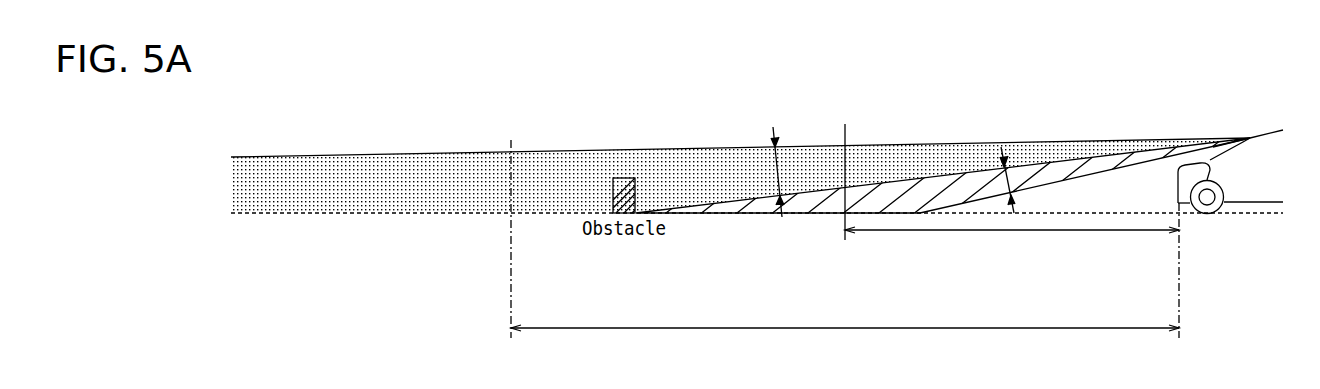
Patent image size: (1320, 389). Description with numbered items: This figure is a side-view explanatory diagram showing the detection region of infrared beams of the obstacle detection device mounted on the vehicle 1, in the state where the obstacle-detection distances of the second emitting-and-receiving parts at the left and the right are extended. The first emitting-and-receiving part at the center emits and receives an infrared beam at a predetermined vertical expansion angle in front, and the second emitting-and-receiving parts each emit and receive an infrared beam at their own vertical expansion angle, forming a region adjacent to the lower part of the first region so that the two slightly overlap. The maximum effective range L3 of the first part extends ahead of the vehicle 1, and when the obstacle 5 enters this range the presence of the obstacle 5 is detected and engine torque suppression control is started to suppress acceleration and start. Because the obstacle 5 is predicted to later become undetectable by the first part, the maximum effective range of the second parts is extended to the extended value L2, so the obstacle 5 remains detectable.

The vehicle 1 is at (1264, 121).
The obstacle 5 is at (625, 178).
The extended value of the maximum effective range of the second emitting-and-receivi L2 is at (1012, 269).
The maximum effective range of the first emitting-and-receiving part L3 is at (845, 340).